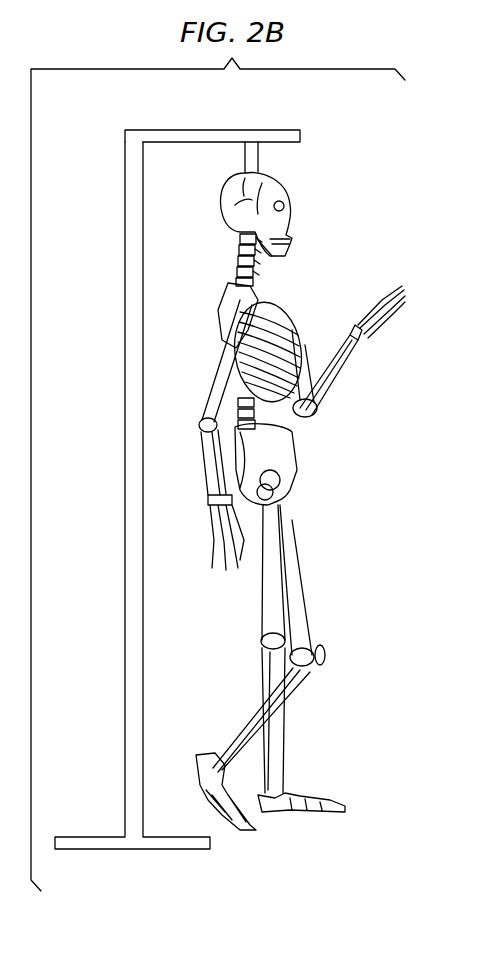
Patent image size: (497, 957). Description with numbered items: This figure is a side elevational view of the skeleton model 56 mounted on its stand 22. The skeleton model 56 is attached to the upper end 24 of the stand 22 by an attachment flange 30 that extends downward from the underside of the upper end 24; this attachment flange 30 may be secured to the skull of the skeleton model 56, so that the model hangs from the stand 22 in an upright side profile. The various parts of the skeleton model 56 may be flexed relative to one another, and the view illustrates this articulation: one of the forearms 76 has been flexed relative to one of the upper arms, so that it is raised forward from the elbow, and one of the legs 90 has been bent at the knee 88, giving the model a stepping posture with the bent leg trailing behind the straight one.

The stand 22 is at (108, 166).
The upper end 24 is at (198, 135).
The attachment flange 30 is at (258, 170).
The skeleton model 56 is at (322, 228).
The forearm 76 is at (338, 380).
The knee 88 is at (324, 660).
The leg 90 is at (237, 725).